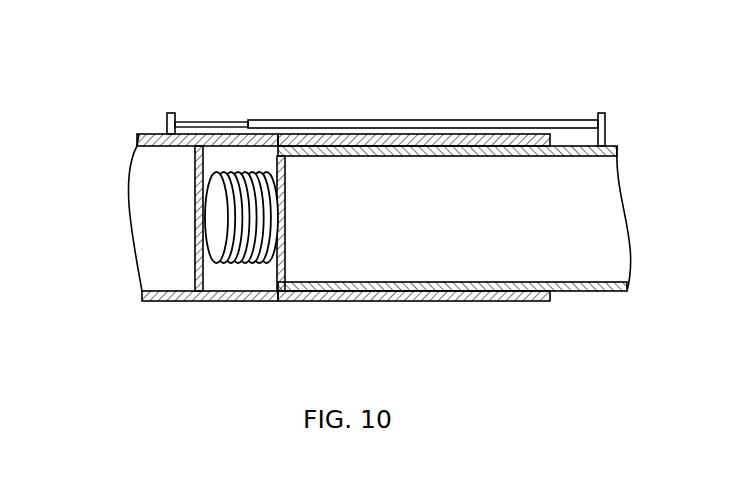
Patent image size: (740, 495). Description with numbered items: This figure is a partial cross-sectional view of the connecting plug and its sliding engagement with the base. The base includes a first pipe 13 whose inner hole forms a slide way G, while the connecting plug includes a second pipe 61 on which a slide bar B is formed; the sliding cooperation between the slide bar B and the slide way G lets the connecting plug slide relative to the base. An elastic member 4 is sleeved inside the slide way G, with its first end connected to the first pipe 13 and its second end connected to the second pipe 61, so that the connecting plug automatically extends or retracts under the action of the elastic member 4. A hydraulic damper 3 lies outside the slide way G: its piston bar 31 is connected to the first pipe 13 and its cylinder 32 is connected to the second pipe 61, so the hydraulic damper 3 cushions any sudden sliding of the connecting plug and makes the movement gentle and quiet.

The hydraulic damper 3 is at (381, 73).
The piston bar 31 is at (222, 120).
The cylinder 32 is at (285, 123).
The first pipe 13 is at (148, 133).
The elastic member 4 is at (228, 232).
The slide way G is at (245, 280).
The slide bar B is at (437, 360).
The second pipe 61 is at (483, 292).